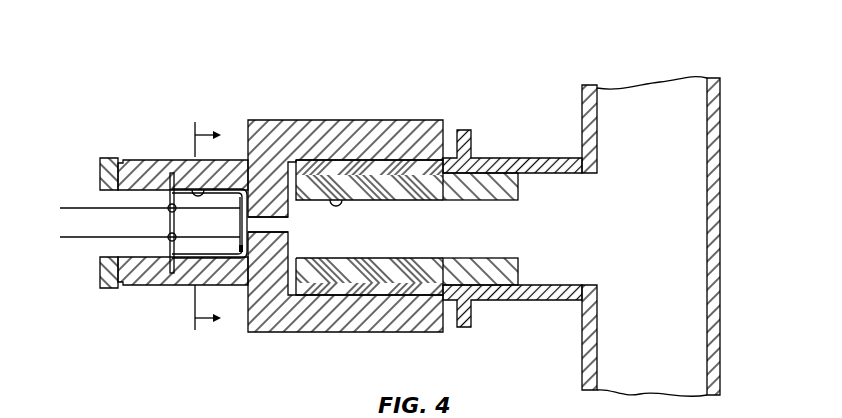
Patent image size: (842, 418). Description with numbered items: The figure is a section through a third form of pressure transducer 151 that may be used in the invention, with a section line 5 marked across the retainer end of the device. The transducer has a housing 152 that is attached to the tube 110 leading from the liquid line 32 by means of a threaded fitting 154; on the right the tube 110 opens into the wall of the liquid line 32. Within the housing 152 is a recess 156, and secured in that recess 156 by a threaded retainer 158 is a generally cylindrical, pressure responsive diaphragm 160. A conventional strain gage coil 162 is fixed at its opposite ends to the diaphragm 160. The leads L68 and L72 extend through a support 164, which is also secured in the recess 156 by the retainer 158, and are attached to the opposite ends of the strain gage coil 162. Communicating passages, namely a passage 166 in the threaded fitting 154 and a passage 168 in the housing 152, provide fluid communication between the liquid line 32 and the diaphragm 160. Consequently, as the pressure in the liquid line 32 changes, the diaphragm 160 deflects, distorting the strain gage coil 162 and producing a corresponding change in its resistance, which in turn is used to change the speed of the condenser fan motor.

The liquid line 32 is at (592, 103).
The tube 110 is at (552, 158).
The pressure transducer 151 is at (362, 103).
The housing 152 is at (262, 336).
The threaded fitting 154 is at (490, 283).
The recess 156 is at (183, 186).
The threaded retainer 158 is at (100, 168).
The pressure responsive diaphragm 160 is at (235, 249).
The strain gage coil 162 is at (238, 222).
The support 164 is at (167, 246).
The communicating passage 166 is at (332, 201).
The communicating passage 168 is at (291, 218).
The lead L72 is at (70, 206).
The lead L68 is at (78, 239).
The section line 5- 5 is at (198, 226).